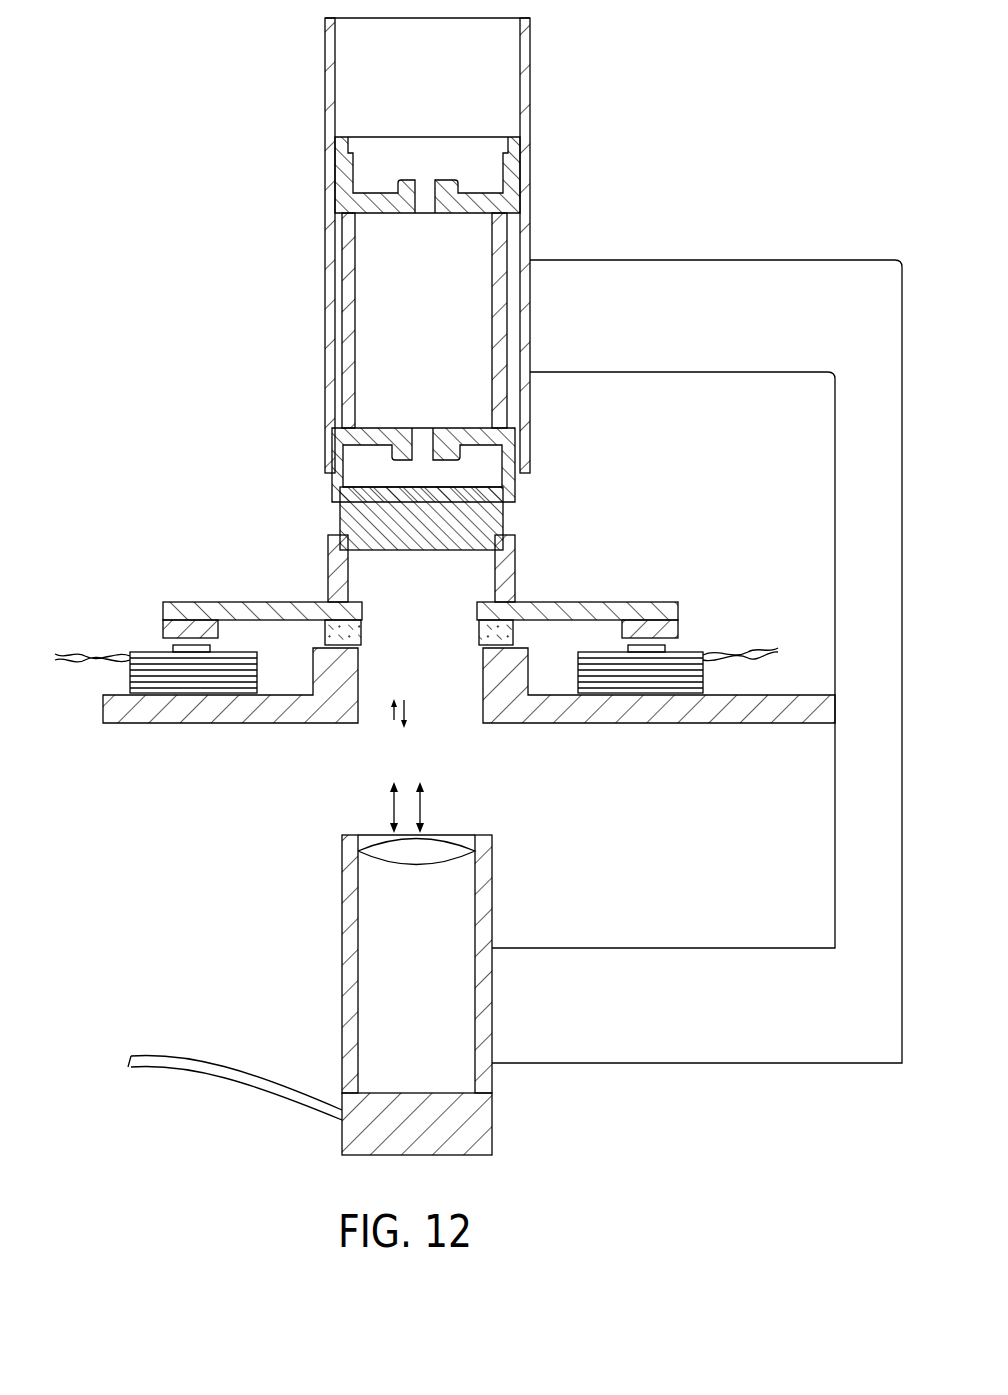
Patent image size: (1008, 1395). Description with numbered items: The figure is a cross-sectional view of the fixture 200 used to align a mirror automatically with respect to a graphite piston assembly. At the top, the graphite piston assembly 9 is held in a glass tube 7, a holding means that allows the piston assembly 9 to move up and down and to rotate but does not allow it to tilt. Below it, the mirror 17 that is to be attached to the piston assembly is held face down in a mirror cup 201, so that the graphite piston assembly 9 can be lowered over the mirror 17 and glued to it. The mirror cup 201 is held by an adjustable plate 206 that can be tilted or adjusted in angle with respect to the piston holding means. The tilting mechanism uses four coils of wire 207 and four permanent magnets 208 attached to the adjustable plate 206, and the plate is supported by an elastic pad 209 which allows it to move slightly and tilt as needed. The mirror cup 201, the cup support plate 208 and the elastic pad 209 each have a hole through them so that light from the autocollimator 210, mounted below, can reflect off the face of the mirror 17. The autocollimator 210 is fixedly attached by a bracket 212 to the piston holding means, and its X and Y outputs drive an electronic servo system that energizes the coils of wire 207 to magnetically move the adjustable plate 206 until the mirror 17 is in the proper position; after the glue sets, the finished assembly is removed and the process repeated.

The glass tube 7 is at (326, 92).
The graphite piston assembly 9 is at (343, 281).
The mirror 17 is at (340, 513).
The fixture 200 is at (187, 723).
The mirror cup 201 is at (328, 572).
The adjustable plate 206 is at (192, 602).
The coils of wire 207 is at (130, 668).
The permanent magnets 208 is at (163, 630).
The elastic pad 209 is at (372, 641).
The autocollimator 210 is at (342, 940).
The bracket 212 is at (752, 342).